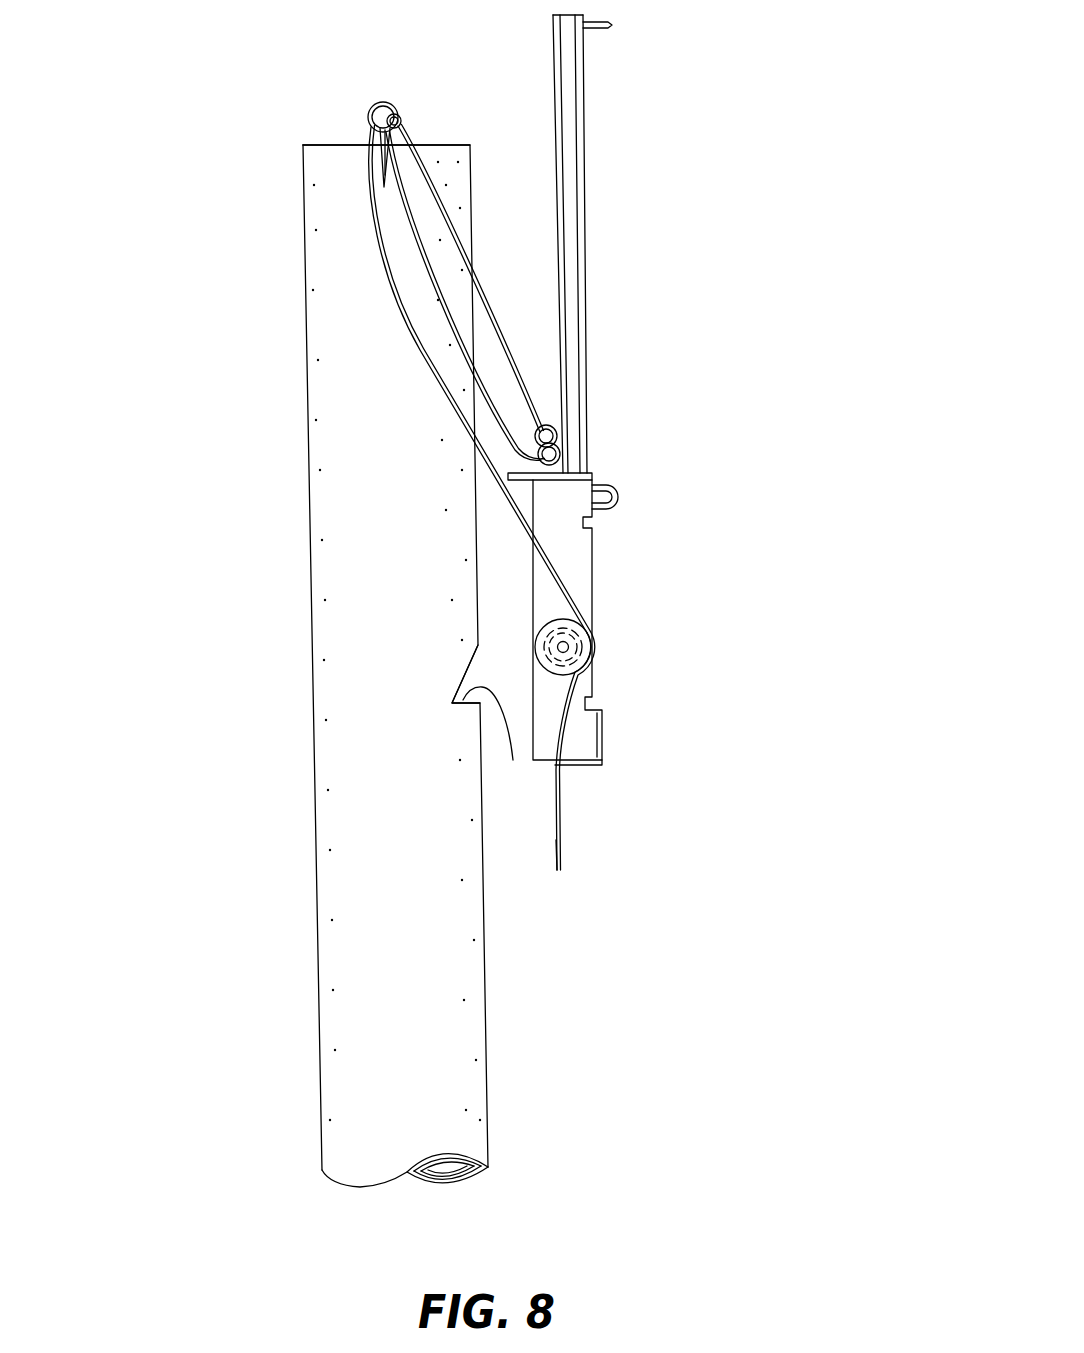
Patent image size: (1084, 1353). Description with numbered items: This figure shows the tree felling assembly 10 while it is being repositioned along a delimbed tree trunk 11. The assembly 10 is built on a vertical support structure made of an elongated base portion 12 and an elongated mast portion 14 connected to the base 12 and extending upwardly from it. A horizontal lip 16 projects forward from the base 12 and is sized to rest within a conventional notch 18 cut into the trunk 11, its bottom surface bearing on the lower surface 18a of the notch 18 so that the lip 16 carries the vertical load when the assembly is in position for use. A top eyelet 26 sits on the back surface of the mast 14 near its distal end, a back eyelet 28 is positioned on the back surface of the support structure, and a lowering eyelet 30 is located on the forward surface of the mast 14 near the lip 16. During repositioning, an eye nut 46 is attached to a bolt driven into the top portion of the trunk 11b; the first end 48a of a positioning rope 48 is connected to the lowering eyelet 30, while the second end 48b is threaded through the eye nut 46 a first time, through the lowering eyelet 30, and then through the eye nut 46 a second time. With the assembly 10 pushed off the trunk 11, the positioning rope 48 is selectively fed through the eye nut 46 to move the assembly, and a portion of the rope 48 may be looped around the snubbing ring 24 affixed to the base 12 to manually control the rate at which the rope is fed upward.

The tree felling assembly 10 is at (729, 325).
The tree trunk 11 is at (307, 582).
The top portion of the trunk 11b is at (327, 150).
The base portion 12 is at (603, 591).
The mast portion 14 is at (600, 207).
The horizontal lip 16 is at (505, 502).
The notch 18 is at (474, 672).
The lower surface of the notch 18a is at (495, 747).
The snubbing ring 24 is at (592, 647).
The top eyelet 26 is at (612, 25).
The back eyelet 28 is at (620, 490).
The lowering eyelet 30 is at (560, 456).
The eye nut 46 is at (381, 101).
The positioning rope 48 is at (572, 806).
The first end of the positioning rope 48a is at (557, 436).
The second end of the positioning rope 48b is at (559, 858).